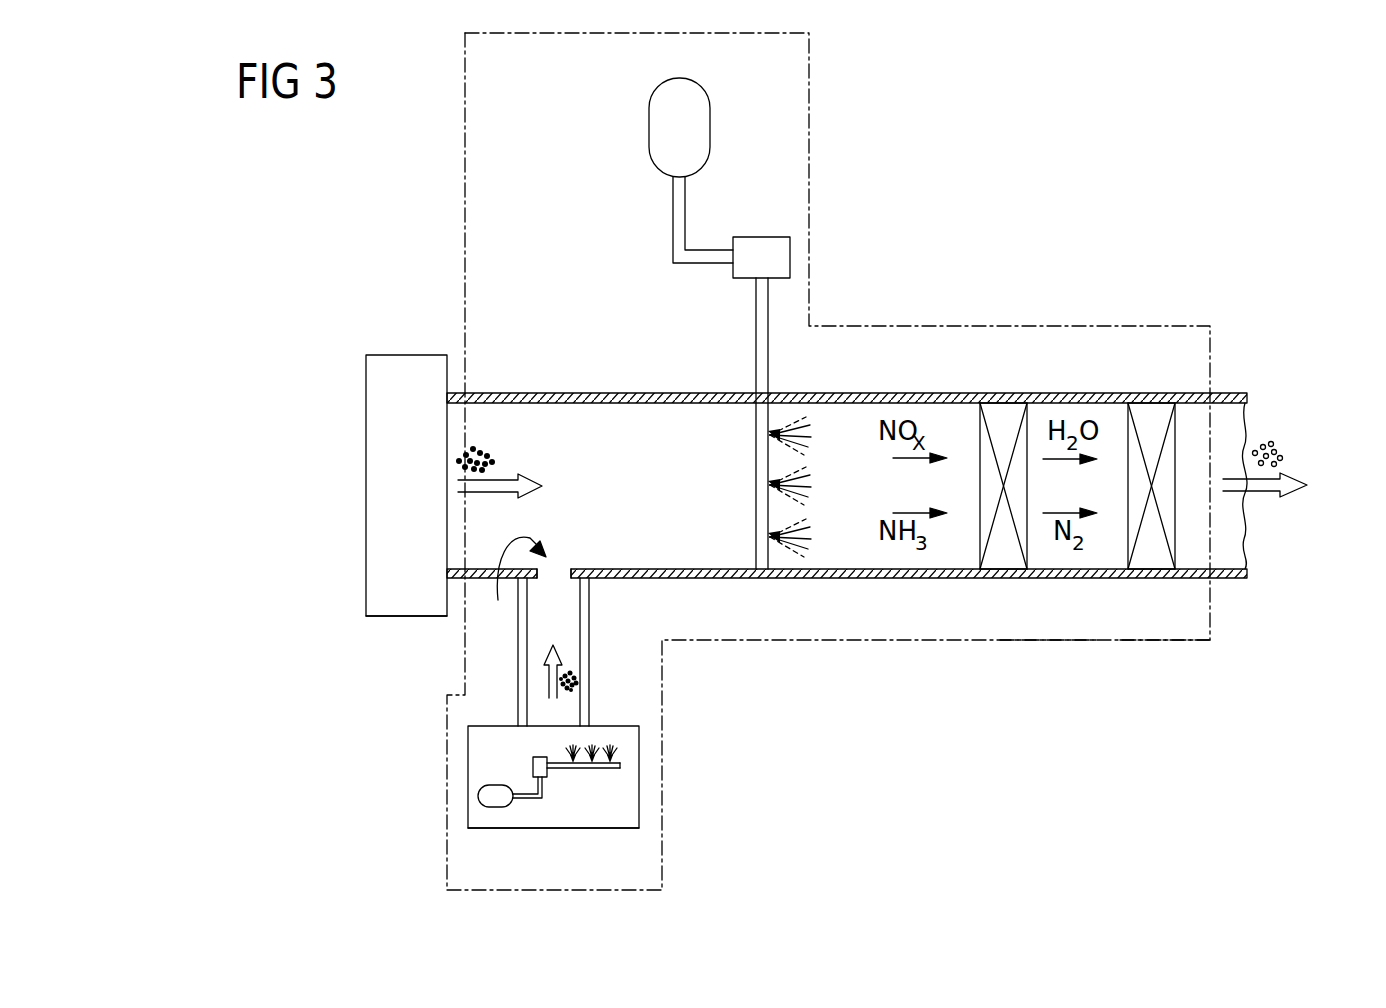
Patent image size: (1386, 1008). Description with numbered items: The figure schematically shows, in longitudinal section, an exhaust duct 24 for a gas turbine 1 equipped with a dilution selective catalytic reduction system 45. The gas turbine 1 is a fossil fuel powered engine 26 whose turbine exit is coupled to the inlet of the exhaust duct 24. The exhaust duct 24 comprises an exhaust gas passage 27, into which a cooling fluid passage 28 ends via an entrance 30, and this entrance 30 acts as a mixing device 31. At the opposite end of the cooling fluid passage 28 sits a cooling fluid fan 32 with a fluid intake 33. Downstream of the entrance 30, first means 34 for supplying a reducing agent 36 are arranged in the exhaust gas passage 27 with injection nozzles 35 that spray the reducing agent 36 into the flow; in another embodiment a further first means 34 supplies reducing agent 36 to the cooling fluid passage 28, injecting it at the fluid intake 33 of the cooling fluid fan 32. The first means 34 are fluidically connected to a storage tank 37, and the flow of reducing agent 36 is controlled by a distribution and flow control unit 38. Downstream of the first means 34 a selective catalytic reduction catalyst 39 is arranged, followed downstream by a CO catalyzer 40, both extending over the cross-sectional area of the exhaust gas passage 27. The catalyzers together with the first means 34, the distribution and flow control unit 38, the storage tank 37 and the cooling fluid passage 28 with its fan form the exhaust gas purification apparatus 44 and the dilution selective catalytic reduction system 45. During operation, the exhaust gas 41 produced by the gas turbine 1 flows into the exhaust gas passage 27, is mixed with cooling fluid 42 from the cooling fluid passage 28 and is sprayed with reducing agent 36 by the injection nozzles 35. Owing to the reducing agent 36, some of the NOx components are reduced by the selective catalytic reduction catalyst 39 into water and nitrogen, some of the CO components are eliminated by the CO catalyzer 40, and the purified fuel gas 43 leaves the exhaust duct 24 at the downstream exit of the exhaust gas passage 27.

The gas turbine 1 is at (405, 355).
The exhaust duct 24 is at (928, 292).
The fossil fuel powered engine 26 is at (408, 620).
The exhaust gas passage 27 is at (948, 553).
The cooling fluid passage 28 is at (567, 632).
The entrance 30 is at (566, 572).
The mixing device 31 is at (514, 586).
The cooling fluid fan 32 is at (468, 760).
The fluid intake 33 is at (551, 838).
The first means for supplying a reducing agent 34 is at (778, 560).
The injection nozzles 35 is at (773, 426).
The reducing agent 36 is at (806, 424).
The storage tank 37 is at (649, 126).
The distribution & flow control unit 38 is at (760, 237).
The selective catalytic reduction catalyst 39 is at (1002, 416).
The CO catalyzer 40 is at (1158, 416).
The exhaust gas 41 is at (488, 438).
The cooling fluid 42 is at (595, 680).
The purified fuel gas 43 is at (1290, 436).
The exhaust gas purification apparatus 44 is at (1157, 641).
The dilution selective catalytic reduction system 45 is at (1067, 641).